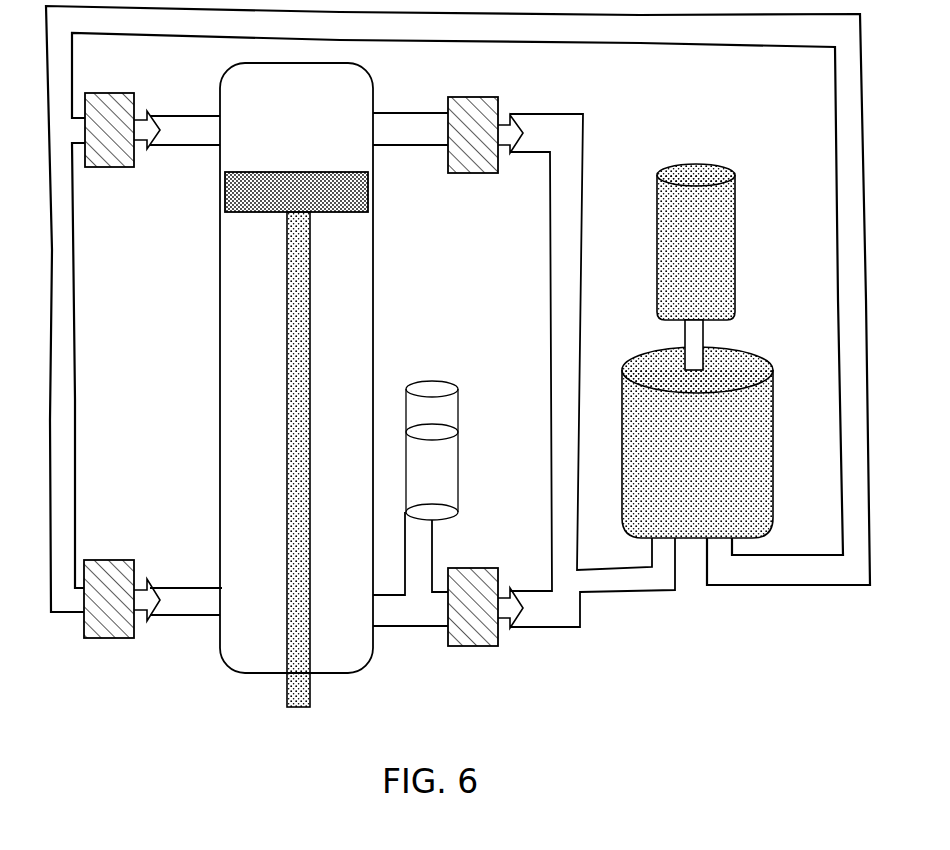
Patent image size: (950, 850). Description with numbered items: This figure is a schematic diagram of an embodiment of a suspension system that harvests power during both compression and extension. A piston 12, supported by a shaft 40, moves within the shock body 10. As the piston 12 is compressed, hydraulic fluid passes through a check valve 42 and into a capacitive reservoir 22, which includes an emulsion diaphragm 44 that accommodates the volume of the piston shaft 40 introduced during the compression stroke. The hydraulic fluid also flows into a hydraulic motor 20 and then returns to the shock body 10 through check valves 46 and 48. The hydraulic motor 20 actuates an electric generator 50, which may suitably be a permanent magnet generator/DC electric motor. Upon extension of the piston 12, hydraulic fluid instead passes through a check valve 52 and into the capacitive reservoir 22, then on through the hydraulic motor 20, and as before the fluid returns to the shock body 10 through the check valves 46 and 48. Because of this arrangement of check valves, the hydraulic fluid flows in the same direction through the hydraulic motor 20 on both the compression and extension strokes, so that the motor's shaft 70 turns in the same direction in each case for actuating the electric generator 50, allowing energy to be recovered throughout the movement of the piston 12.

The shock body 10 is at (373, 278).
The piston 12 is at (225, 192).
The shaft 40 is at (292, 305).
The capacitive reservoir 22 is at (459, 392).
The emulsion diaphragm 44 is at (455, 433).
The check valve 46 is at (110, 160).
The check valve 42 is at (467, 97).
The check valve 48 is at (108, 560).
The check valve 52 is at (478, 646).
The electric generator 50 is at (668, 246).
The shaft 70 is at (690, 347).
The hydraulic motor 20 is at (632, 430).